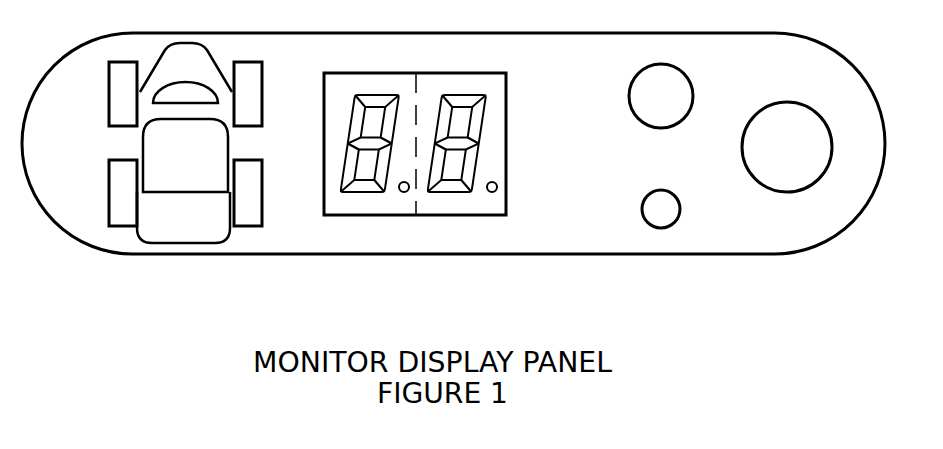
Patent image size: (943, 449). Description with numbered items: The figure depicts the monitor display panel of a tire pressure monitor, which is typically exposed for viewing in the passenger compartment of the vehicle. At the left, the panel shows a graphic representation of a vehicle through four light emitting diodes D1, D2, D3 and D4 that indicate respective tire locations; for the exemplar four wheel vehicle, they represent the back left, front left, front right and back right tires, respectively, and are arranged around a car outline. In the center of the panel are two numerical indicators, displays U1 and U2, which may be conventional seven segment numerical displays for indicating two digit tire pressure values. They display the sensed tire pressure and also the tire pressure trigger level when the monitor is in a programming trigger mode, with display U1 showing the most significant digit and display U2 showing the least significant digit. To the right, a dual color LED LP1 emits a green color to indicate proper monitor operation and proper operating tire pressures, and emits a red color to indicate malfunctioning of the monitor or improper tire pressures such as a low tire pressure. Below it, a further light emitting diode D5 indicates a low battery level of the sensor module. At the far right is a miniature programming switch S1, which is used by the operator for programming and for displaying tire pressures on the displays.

The light emitting diode D1 is at (98, 193).
The light emitting diode D2 is at (98, 94).
The light emitting diode D3 is at (268, 94).
The light emitting diode D4 is at (268, 193).
The light emitting diode D5 is at (639, 209).
The seven segment numerical display U1 is at (375, 115).
The seven segment numerical display U2 is at (462, 115).
The dual color LED LP1 is at (645, 83).
The miniature programming switch S1 is at (787, 131).